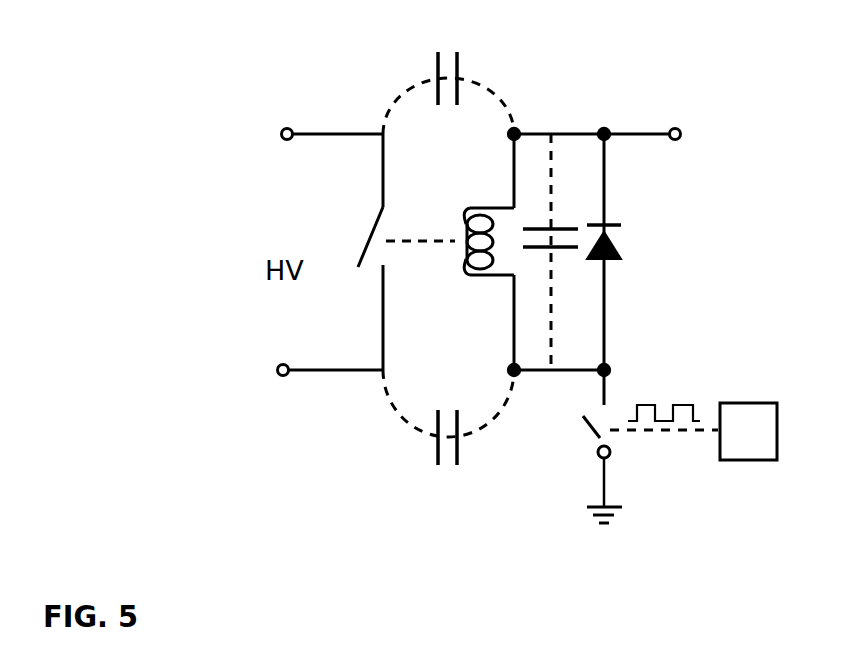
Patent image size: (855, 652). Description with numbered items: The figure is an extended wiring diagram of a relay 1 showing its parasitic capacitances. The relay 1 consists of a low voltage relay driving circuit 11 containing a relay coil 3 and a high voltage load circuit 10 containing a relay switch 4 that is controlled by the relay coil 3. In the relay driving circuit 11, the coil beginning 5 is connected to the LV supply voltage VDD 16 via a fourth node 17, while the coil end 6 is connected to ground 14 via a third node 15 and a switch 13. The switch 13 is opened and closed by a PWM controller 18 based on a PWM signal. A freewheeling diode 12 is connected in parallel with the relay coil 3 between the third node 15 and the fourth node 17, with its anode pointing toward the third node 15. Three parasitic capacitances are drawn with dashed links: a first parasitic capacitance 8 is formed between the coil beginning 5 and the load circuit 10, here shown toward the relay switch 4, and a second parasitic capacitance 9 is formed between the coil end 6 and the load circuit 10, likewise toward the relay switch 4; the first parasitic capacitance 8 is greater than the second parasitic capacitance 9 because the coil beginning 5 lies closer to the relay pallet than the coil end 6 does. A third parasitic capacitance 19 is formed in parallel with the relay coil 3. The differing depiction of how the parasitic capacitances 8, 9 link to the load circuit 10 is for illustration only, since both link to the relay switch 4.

The relay 1 is at (292, 68).
The relay coil 3 is at (487, 206).
The relay switch 4 is at (363, 249).
The coil beginning 5 is at (516, 132).
The coil end 6 is at (512, 371).
The first parasitic capacitance 8 is at (458, 78).
The second parasitic capacitance 9 is at (437, 436).
The high voltage load circuit 10 is at (327, 134).
The low voltage relay driving circuit 11 is at (553, 132).
The freewheeling diode 12 is at (612, 239).
The switch 13 is at (593, 431).
The ground 14 is at (625, 513).
The third node 15 is at (612, 368).
The LV supply voltage VDD 16 is at (677, 128).
The fourth node 17 is at (606, 132).
The PWM controller 18 is at (766, 450).
The third parasitic capacitance 19 is at (565, 250).